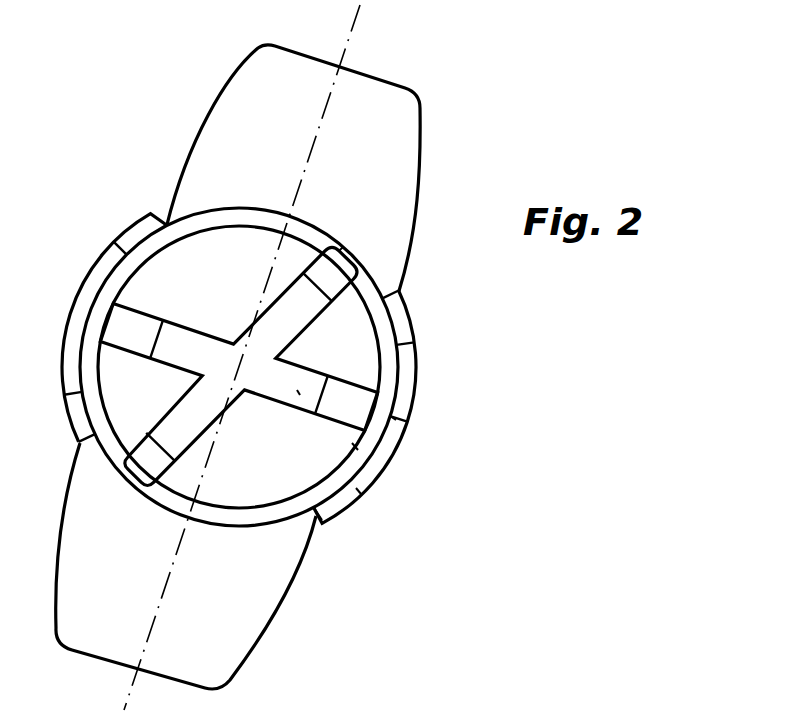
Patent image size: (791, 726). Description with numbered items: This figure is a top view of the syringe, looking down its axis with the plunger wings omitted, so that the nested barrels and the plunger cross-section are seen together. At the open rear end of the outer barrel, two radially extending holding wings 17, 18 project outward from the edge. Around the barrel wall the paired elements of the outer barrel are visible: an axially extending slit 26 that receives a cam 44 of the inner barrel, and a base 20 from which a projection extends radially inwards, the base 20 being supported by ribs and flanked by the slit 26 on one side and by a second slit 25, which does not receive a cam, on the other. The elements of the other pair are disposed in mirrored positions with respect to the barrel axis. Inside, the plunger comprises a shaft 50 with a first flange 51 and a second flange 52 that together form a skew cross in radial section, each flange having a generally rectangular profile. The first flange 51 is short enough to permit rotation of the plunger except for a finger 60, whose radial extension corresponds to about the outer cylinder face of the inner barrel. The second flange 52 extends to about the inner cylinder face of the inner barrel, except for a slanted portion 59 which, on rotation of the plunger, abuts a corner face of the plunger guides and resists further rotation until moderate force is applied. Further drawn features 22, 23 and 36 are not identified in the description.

The holding wing 17 is at (380, 142).
The holding wing 18 is at (232, 627).
The base 20 is at (398, 418).
The bezel 22 is at (418, 398).
The latch 23 is at (357, 448).
The second slit 25 is at (400, 320).
The axially extending slit 26 is at (360, 493).
The lug 36 is at (350, 243).
The cam 44 is at (333, 500).
The shaft 50 is at (237, 307).
The first flange 51 is at (300, 318).
The second flange 52 is at (297, 390).
The slanted portion 59 is at (400, 420).
The finger 60 is at (350, 265).